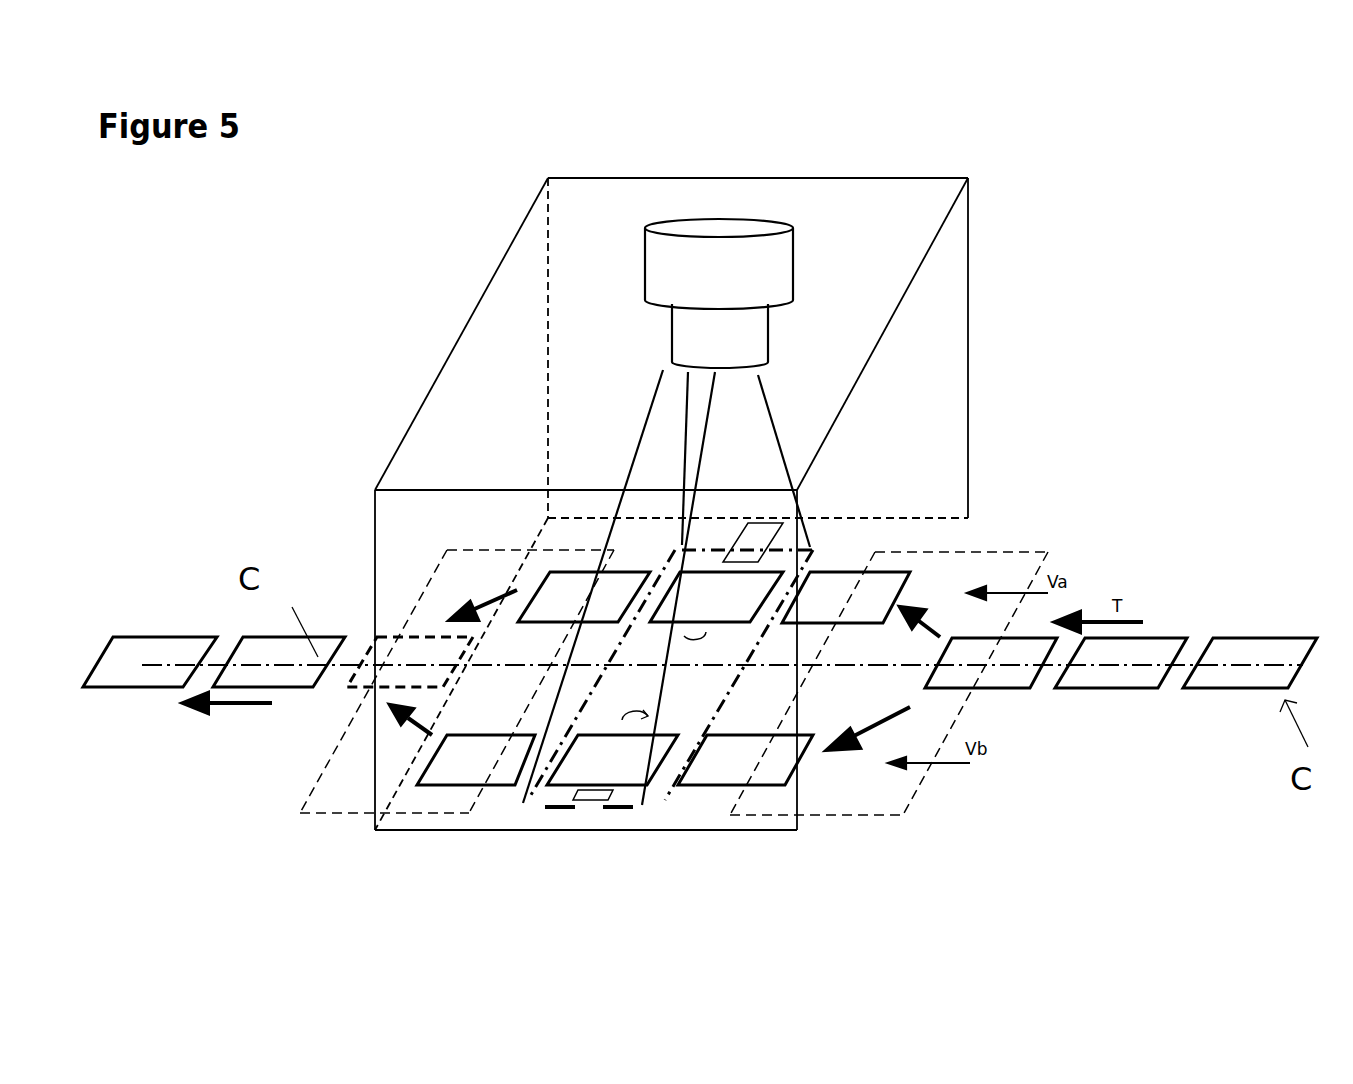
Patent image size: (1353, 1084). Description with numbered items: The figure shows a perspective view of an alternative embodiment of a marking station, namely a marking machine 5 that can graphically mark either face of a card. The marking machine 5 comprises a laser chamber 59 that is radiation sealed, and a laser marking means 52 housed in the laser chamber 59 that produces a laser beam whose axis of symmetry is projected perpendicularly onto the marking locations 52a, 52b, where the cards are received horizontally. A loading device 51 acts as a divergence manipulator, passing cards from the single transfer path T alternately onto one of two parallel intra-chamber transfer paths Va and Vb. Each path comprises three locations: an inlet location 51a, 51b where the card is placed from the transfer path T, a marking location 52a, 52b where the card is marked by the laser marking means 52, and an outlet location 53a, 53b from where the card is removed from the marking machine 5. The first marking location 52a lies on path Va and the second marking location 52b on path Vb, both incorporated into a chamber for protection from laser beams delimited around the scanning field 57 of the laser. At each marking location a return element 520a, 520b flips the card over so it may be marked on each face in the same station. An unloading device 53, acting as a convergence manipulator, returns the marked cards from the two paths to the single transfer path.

The marking machine 5 is at (722, 504).
The laser chamber 59 is at (925, 385).
The laser marking means 52 is at (772, 277).
The unloading device 53 is at (460, 573).
The loading device 51 is at (1007, 565).
The outlet location 53a is at (562, 590).
The first marking location 52a is at (793, 547).
The inlet location 51a is at (800, 822).
The return element 520a is at (757, 530).
The outlet location 53b is at (463, 750).
The second marking location 52b is at (573, 770).
The inlet location 51b is at (738, 765).
The return element 520b is at (610, 795).
The scanning field 57 is at (628, 800).